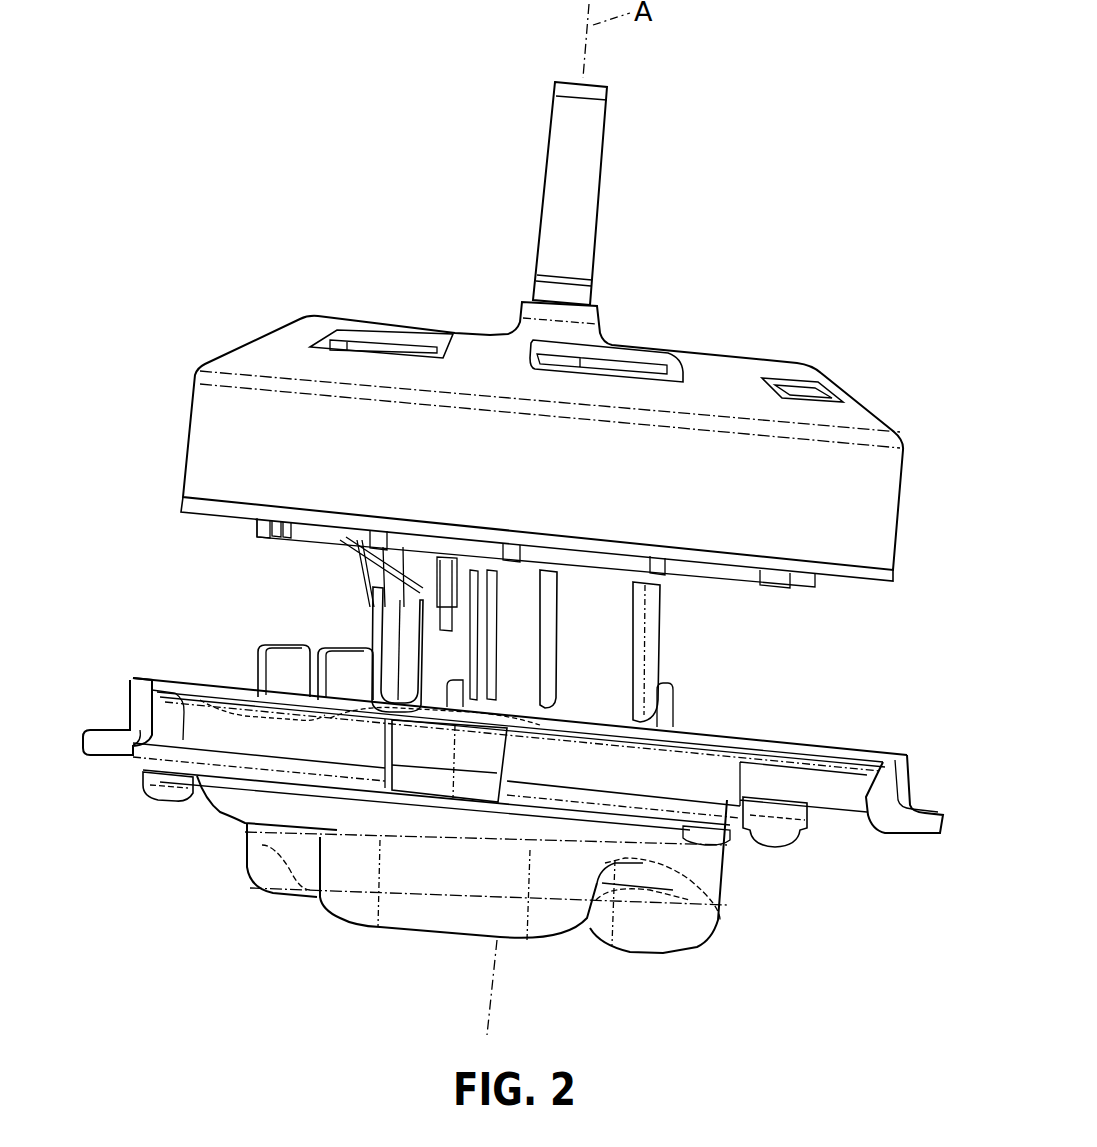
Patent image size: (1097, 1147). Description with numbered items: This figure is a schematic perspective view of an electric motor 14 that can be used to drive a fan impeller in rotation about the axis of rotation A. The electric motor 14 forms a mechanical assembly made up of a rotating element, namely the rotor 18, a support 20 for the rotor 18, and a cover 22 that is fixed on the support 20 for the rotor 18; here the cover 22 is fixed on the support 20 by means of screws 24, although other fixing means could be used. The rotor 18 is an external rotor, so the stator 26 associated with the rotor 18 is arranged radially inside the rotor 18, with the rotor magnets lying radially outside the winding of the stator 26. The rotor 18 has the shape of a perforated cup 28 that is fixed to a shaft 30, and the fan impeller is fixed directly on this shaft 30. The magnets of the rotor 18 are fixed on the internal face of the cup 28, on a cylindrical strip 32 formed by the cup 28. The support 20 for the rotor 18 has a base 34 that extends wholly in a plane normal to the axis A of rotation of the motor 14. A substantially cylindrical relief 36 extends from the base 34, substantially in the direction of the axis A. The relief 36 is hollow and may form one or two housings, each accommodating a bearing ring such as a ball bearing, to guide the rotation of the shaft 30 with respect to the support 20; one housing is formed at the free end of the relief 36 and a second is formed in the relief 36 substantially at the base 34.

The electric motor 14 is at (222, 272).
The rotor 18 is at (389, 295).
The support for the rotor 20 is at (886, 756).
The cover 22 is at (390, 875).
The screws 24 is at (168, 785).
The stator 26 is at (296, 540).
The perforated cup 28 is at (735, 356).
The shaft 30 is at (590, 150).
The cylindrical strip 32 is at (215, 425).
The base 34 is at (160, 703).
The cylindrical relief 36 is at (648, 611).